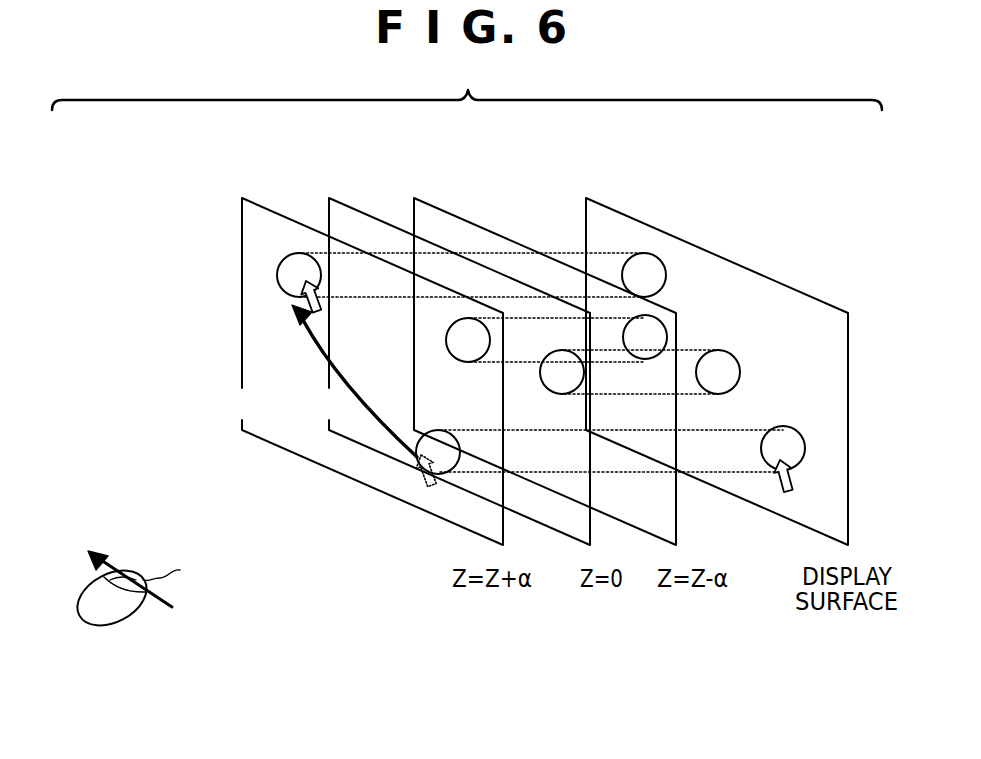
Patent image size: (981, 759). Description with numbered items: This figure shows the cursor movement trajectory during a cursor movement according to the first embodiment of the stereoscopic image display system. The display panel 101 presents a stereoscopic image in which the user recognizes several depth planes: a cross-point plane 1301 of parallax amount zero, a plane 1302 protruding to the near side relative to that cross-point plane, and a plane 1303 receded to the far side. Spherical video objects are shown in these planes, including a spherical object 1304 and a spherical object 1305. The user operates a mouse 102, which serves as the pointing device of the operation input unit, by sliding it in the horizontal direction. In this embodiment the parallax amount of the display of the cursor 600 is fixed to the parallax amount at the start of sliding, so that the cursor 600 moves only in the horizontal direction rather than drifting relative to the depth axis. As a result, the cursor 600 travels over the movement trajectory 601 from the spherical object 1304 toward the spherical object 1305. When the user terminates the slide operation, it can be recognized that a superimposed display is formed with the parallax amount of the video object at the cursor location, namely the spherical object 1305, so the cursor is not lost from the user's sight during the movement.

The display panel 101 is at (633, 216).
The mouse 102 is at (98, 625).
The cursor 600 is at (417, 479).
The movement trajectory 601 is at (315, 347).
The cross-point plane 1301 is at (373, 213).
The plane protruding to the near side 1302 is at (271, 210).
The plane receded to the far side 1303 is at (479, 221).
The spherical object 1304 is at (460, 470).
The spherical object 1305 is at (278, 275).